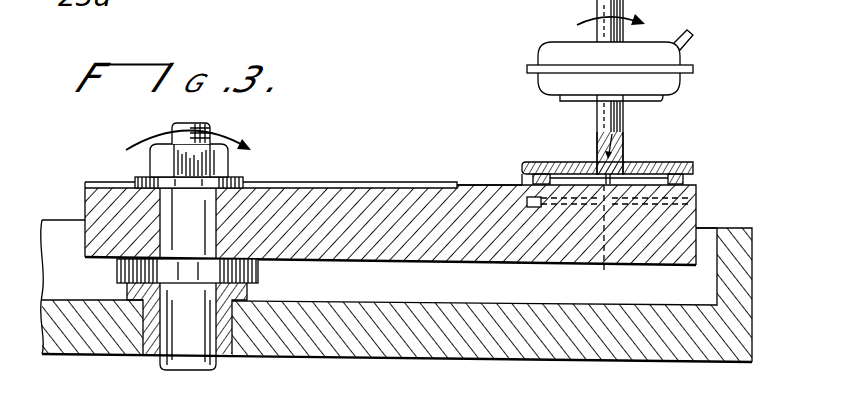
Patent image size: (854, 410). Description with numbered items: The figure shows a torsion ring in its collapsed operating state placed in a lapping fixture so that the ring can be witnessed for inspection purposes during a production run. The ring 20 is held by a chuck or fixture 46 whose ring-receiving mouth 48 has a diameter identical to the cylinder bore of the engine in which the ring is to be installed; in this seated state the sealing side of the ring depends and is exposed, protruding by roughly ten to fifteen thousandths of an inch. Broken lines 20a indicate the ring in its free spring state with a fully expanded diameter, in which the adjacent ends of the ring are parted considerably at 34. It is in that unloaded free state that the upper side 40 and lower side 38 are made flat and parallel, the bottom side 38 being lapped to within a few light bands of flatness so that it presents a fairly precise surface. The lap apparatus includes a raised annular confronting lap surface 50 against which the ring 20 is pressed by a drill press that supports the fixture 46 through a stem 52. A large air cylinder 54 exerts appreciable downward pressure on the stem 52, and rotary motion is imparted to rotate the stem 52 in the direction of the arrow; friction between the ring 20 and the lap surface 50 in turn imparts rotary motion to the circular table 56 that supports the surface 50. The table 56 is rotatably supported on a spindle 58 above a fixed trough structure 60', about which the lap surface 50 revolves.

The ring 20 is at (697, 169).
The broken lines showing free spring state of ring 20a is at (289, 223).
The parting of the ring ends 34 is at (604, 270).
The lower side 38 is at (514, 190).
The upper side 40 is at (514, 190).
The chuck or fixture 46 is at (657, 162).
The ring-receiving mouth 48 is at (541, 183).
The raised annular confronting lap surface 50 is at (470, 185).
The stem 52 is at (603, 116).
The air cylinder 54 is at (640, 52).
The table 56 is at (335, 182).
The spindle 58 is at (238, 177).
The base 60' is at (396, 312).